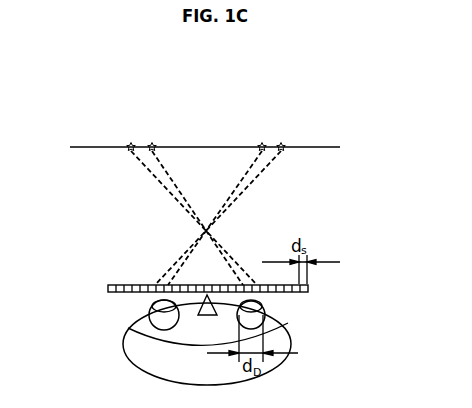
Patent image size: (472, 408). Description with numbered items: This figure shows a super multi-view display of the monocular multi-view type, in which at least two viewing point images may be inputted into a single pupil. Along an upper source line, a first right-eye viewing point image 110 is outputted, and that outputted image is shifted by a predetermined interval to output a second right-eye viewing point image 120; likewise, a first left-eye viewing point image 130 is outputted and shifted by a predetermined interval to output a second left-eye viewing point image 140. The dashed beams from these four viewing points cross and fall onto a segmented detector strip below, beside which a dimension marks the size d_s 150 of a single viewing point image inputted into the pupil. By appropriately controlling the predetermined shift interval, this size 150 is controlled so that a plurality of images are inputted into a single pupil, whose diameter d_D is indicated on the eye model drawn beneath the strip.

The first right-eye viewing point image 110 is at (128, 143).
The second right-eye viewing point image 120 is at (152, 142).
The first left-eye viewing point image 130 is at (262, 142).
The second left-eye viewing point image 140 is at (282, 142).
The size d_s of a single viewing point image 150 is at (305, 233).